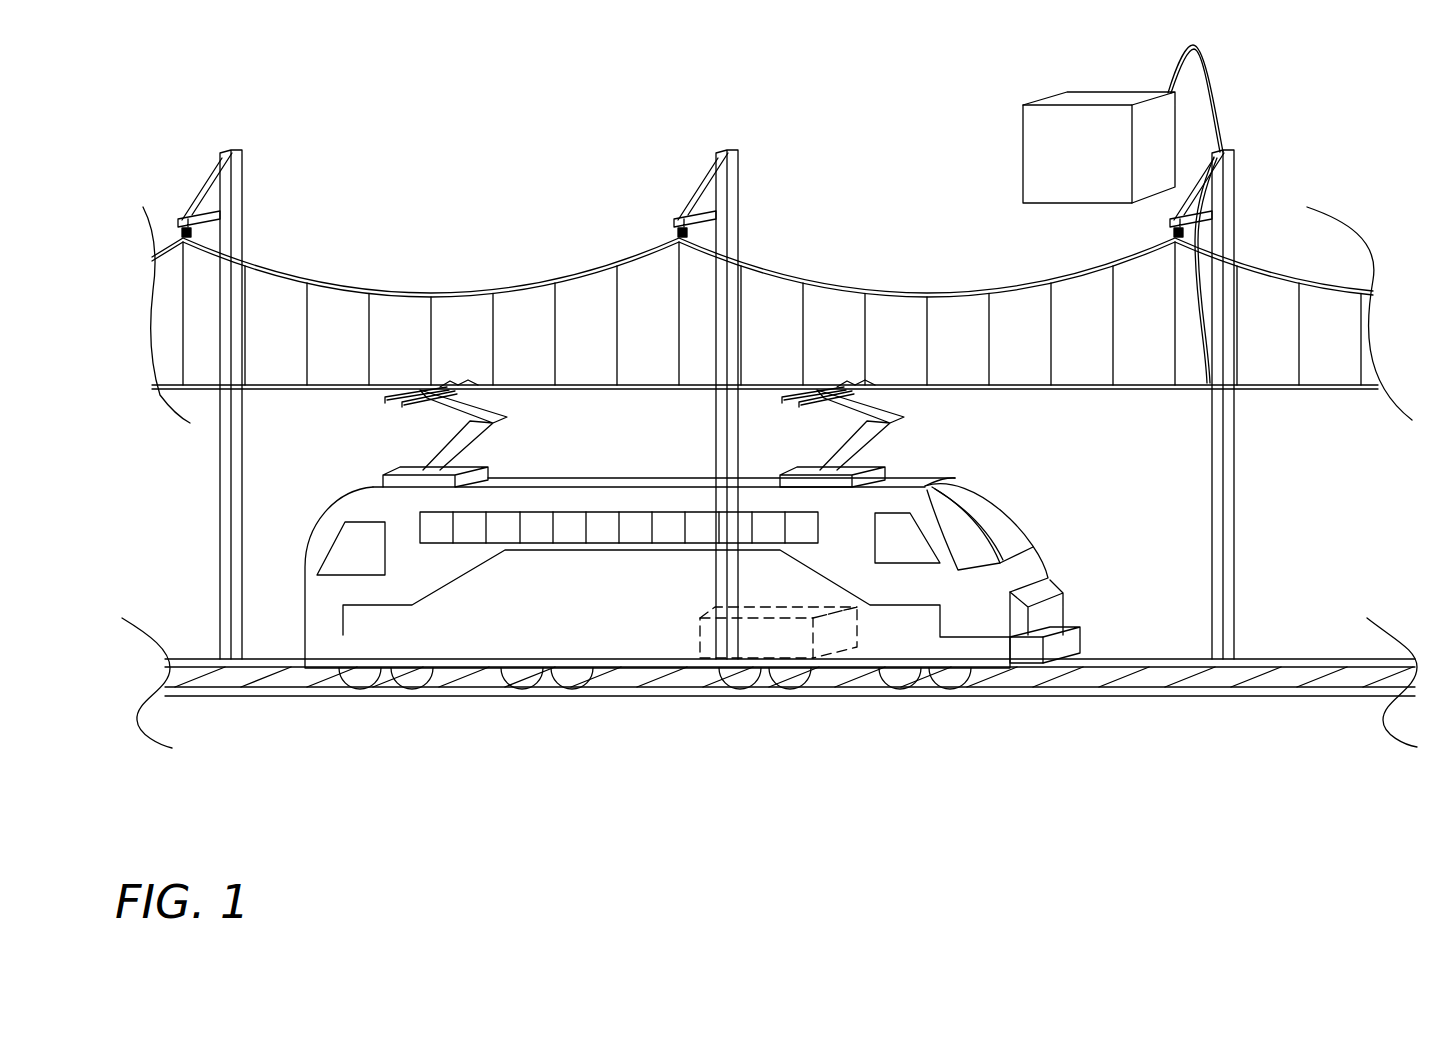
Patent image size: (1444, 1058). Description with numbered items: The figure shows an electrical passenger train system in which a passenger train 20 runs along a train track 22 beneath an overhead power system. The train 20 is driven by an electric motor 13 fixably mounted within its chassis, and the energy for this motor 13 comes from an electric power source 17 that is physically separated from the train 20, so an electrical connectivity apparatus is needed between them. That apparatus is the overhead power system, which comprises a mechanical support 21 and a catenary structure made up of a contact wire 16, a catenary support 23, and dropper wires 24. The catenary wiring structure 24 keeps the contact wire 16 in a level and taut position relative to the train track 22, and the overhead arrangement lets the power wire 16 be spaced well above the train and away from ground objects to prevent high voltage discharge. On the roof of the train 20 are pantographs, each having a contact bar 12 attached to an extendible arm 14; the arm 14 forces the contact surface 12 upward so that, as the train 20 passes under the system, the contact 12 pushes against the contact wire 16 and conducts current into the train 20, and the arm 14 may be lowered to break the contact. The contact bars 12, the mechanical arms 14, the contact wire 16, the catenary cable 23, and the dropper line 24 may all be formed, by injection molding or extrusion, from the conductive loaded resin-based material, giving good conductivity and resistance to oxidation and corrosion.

The contact bar 12 is at (388, 400).
The electric motor 13 is at (832, 640).
The extendible arm 14 is at (503, 413).
The contact wire 16 is at (1265, 389).
The electric power source 17 is at (1023, 115).
The train 20 is at (993, 510).
The mechanical support 21 is at (242, 197).
The train track 22 is at (1100, 688).
The catenary support 23 is at (903, 291).
The dropper wires 24 is at (1299, 327).